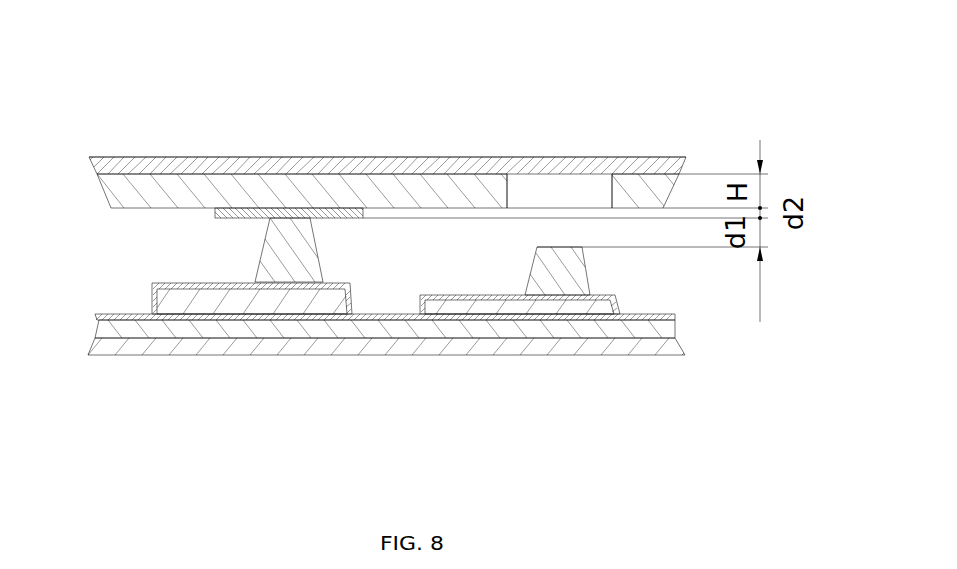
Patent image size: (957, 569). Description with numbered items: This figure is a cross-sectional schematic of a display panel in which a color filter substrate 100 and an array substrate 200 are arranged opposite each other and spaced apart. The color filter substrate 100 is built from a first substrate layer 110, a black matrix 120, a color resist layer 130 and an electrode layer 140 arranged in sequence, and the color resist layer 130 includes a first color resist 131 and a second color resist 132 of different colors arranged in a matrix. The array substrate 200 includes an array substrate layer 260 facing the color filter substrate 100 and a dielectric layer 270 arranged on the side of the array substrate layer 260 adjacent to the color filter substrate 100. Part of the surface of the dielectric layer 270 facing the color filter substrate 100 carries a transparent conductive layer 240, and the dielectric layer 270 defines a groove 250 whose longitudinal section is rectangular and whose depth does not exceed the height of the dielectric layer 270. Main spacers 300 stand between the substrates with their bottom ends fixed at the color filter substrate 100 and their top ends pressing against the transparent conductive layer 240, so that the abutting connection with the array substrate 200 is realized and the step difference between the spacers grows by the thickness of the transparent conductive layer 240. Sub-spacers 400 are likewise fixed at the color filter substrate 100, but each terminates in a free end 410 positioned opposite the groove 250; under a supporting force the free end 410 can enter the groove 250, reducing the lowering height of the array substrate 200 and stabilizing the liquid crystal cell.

The first substrate/color filter substrate 100 is at (401, 381).
The first substrate layer 110 is at (177, 335).
The black matrix 120 is at (233, 320).
The color resist layer 130 is at (532, 413).
The first color resist 131 is at (290, 303).
The second color resist 132 is at (537, 308).
The electrode layer 140 is at (113, 348).
The second substrate/array substrate 200 is at (358, 60).
The transparent conductive layer 240 is at (195, 157).
The groove 250 is at (514, 188).
The array substrate layer 260 is at (235, 157).
The dielectric layer 270 is at (348, 157).
The main spacer 300 is at (284, 246).
The sub-spacer 400 is at (549, 254).
The free end 410 is at (567, 252).